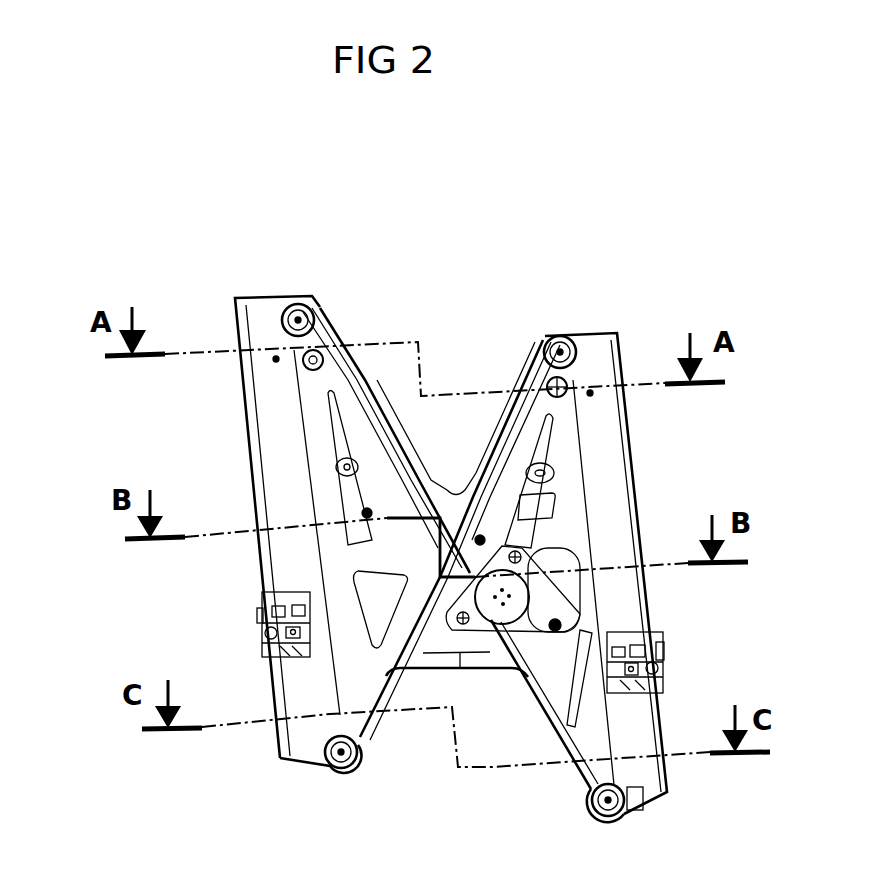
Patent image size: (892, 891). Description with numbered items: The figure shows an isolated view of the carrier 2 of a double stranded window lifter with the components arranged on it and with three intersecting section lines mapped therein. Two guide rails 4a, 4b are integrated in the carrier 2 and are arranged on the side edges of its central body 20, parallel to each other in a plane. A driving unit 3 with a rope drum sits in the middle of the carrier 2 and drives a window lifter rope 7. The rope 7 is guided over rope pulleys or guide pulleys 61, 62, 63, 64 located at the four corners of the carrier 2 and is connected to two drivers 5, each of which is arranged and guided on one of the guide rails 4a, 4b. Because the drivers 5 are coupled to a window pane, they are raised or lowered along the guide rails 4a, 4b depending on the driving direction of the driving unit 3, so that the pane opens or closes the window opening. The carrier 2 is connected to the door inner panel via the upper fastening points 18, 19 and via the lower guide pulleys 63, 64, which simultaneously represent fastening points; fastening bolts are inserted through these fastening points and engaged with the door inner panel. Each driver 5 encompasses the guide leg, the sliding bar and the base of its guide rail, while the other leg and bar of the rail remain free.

The carrier 2 is at (461, 300).
The driving unit 3 is at (535, 597).
The guide rail 4a is at (281, 452).
The guide rail 4b is at (605, 472).
The driver 5 is at (262, 628).
The window lifter rope 7 is at (400, 456).
The upper fastening point 18 is at (320, 352).
The upper fastening point 19 is at (560, 384).
The central body 20 is at (540, 521).
The guide pulley 61 is at (300, 318).
The guide pulley 62 is at (563, 336).
The lower guide pulley 63 is at (330, 768).
The lower guide pulley 64 is at (612, 814).